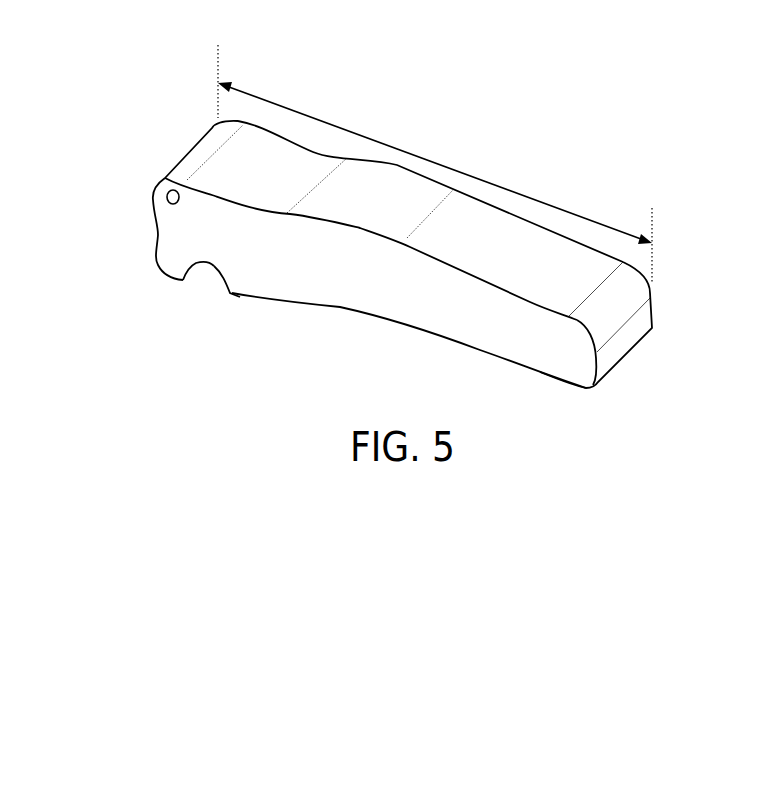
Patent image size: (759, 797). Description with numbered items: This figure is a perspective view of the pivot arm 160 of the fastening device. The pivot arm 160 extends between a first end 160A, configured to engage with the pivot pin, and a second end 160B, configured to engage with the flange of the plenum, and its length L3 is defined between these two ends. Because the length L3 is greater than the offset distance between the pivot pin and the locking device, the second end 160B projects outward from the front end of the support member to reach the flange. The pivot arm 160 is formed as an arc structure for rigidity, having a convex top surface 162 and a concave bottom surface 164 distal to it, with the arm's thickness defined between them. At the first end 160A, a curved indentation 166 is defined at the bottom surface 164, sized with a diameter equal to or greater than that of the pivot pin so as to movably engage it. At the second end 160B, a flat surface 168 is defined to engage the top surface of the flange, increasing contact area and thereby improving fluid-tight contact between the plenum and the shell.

The pivot arm 160 is at (512, 83).
The first end 160A is at (167, 127).
The second end 160B is at (637, 365).
The top surface 162 is at (523, 272).
The bottom surface 164 is at (236, 294).
The curved indentation 166 is at (200, 265).
The flat surface 168 is at (558, 382).
The length L3 is at (437, 162).